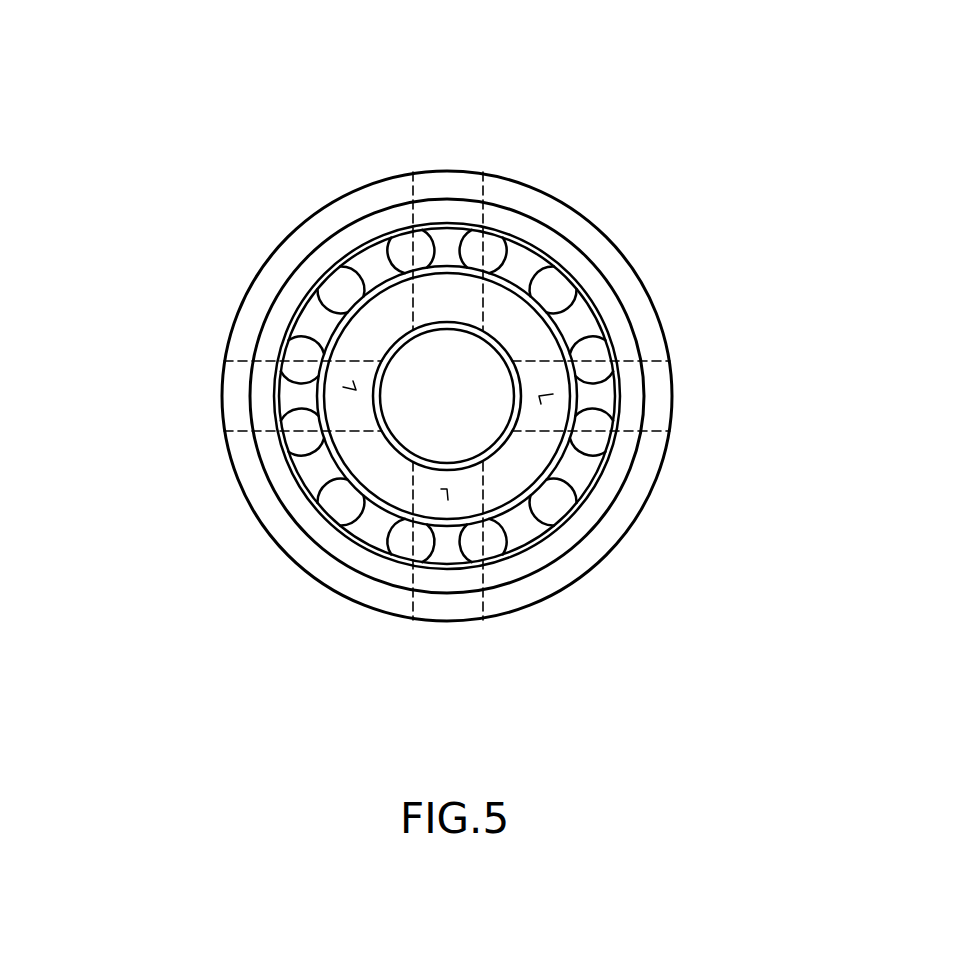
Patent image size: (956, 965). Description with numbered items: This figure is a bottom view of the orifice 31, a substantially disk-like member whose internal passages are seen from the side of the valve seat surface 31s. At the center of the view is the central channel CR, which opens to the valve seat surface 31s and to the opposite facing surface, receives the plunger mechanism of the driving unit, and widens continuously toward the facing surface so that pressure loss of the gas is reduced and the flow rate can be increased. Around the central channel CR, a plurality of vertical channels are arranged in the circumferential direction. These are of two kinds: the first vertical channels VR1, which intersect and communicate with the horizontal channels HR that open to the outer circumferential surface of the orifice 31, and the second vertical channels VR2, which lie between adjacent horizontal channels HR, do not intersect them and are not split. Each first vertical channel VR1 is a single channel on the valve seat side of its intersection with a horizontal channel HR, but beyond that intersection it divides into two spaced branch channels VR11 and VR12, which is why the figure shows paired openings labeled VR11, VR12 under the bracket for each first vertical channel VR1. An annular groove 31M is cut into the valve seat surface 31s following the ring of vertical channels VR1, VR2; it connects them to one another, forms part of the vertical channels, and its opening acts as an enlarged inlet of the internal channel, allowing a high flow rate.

The orifice 31 is at (232, 102).
The annular groove 31M is at (628, 298).
The valve seat surface 31s is at (312, 310).
The central channel CR is at (464, 407).
The horizontal channel HR is at (343, 387).
The first vertical channel VR1 is at (540, 82).
The branch channel VR11 is at (499, 247).
The branch channel VR12 is at (423, 247).
The second vertical channel VR2 is at (349, 286).